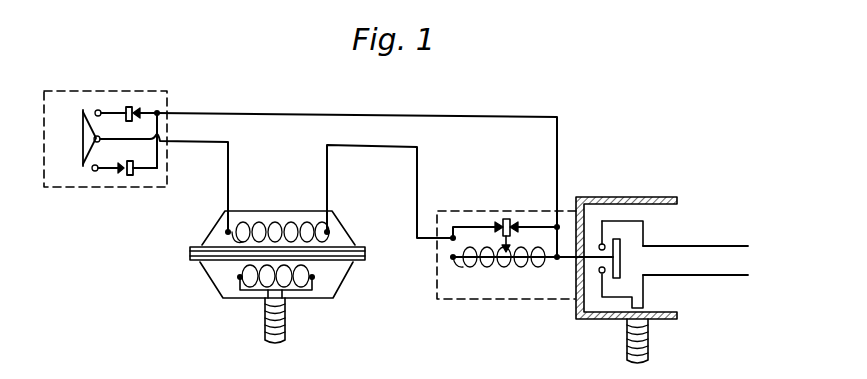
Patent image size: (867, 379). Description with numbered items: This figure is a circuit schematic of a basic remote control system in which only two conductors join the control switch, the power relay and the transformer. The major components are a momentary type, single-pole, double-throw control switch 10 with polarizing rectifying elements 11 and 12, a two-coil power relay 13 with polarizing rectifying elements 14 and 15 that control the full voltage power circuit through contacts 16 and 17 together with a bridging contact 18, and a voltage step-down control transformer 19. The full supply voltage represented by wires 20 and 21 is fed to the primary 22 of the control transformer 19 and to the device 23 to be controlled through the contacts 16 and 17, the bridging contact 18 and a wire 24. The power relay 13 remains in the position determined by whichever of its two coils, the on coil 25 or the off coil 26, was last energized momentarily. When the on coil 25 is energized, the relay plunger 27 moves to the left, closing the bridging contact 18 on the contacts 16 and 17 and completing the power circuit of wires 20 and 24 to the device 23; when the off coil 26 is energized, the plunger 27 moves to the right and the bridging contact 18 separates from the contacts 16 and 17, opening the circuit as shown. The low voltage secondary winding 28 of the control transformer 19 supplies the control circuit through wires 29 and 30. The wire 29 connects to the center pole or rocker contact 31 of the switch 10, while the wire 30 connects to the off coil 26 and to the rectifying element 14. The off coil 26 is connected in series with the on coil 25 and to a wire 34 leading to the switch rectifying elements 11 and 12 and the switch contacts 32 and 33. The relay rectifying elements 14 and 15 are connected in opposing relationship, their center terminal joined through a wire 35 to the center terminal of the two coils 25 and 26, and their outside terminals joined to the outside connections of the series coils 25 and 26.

The control switch 10 is at (48, 91).
The polarizing rectifying element 11 is at (131, 105).
The polarizing rectifying element 12 is at (131, 177).
The power relay 13 is at (466, 302).
The polarizing rectifying element 14 is at (499, 215).
The polarizing rectifying element 15 is at (515, 218).
The contact 16 is at (600, 276).
The contact 17 is at (606, 244).
The bridging contact 18 is at (622, 246).
The control transformer 19 is at (280, 197).
The wire 20 is at (248, 300).
The wire 21 is at (305, 300).
The primary 22 is at (313, 279).
The device 23 is at (701, 263).
The wire 24 is at (712, 246).
The "on" coil 25 is at (552, 268).
The "off" coil 26 is at (458, 264).
The relay plunger 27 is at (570, 262).
The secondary winding 28 is at (228, 232).
The wire 29 is at (230, 150).
The wire 30 is at (327, 163).
The rocker contact 31 is at (83, 139).
The control switch contact 32 is at (100, 109).
The control switch contact 33 is at (94, 172).
The wire 34 is at (520, 118).
The wire 35 is at (542, 214).